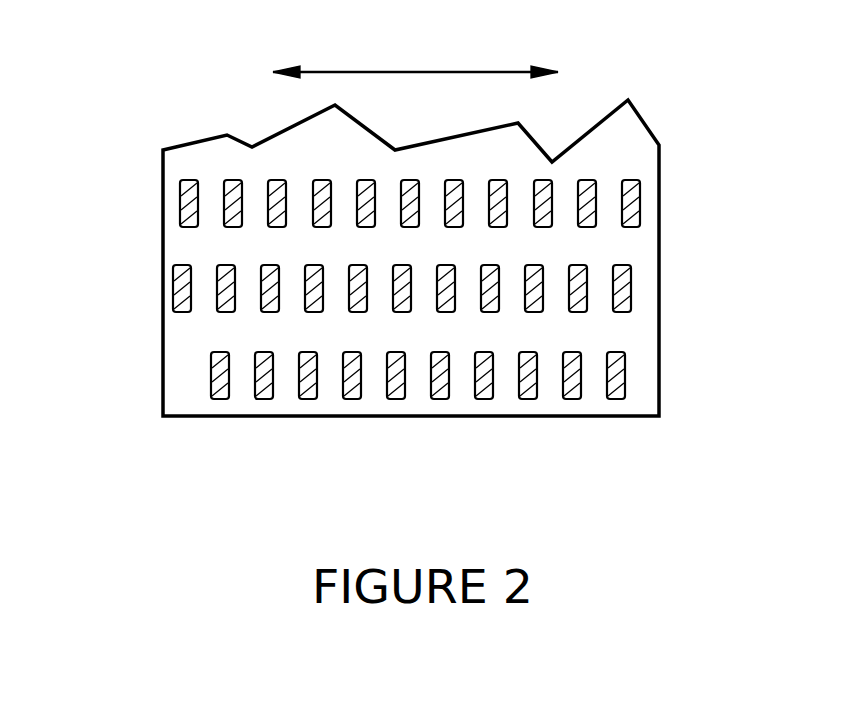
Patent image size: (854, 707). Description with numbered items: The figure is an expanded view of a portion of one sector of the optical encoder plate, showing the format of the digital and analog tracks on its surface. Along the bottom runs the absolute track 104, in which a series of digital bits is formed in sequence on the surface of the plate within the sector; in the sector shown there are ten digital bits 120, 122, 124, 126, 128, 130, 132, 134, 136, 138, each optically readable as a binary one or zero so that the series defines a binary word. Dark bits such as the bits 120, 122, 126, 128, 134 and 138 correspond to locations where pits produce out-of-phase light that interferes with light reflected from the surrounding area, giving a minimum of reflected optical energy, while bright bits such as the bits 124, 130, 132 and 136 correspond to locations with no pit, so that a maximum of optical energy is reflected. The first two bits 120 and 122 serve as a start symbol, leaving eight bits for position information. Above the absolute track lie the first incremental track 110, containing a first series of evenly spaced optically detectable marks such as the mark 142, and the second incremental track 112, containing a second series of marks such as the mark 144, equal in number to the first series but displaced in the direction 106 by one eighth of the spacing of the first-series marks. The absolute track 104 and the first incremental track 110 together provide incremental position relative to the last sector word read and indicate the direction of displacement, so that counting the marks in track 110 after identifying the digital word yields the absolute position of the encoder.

The absolute track 104 is at (353, 425).
The direction 106 is at (415, 72).
The first incremental track 110 is at (401, 272).
The second incremental track 112 is at (401, 182).
The digital bit 120 is at (617, 399).
The digital bit 122 is at (572, 399).
The digital bit 124 is at (527, 399).
The digital bit 126 is at (483, 399).
The digital bit 128 is at (440, 399).
The digital bit 130 is at (395, 399).
The digital bit 132 is at (352, 399).
The digital bit 134 is at (307, 399).
The digital bit 136 is at (265, 399).
The digital bit 138 is at (221, 399).
The mark 142 is at (631, 290).
The mark 144 is at (640, 202).